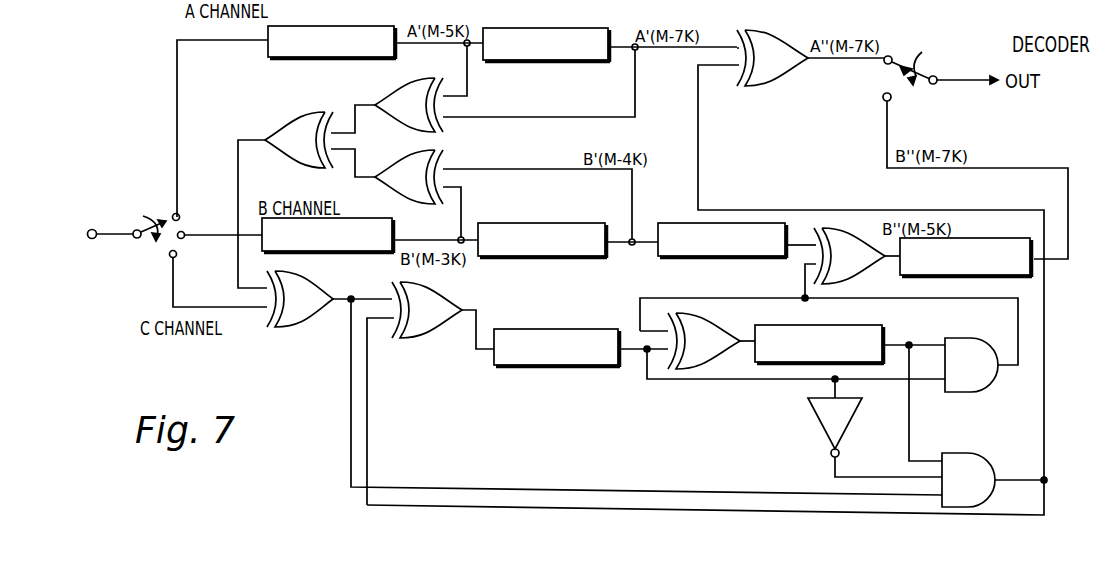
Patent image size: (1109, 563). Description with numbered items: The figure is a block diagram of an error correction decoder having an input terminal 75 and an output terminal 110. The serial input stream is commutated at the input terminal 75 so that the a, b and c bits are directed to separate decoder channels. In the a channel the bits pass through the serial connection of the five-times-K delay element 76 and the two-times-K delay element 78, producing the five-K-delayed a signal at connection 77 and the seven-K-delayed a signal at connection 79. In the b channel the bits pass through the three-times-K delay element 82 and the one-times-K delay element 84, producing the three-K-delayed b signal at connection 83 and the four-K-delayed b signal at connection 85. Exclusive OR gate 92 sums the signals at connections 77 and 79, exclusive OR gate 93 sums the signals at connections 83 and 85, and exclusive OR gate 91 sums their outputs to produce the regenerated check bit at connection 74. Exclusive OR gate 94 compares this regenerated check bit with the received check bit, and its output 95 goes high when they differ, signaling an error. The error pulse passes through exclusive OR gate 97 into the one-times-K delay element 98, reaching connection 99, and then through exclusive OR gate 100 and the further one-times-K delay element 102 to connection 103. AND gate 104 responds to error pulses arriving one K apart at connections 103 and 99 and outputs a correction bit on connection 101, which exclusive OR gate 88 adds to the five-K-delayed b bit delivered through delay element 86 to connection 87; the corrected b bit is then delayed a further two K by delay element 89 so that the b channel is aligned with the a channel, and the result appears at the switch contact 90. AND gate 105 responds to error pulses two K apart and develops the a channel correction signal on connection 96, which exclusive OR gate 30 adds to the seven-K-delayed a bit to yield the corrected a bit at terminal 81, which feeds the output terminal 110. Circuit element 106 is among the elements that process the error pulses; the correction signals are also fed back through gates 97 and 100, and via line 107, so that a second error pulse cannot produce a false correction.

The exclusive OR gate 30 is at (789, 71).
The connection 74 is at (236, 155).
The input terminal 75 is at (115, 233).
The 5 times K delay element 76 is at (320, 24).
The connection 77 is at (470, 81).
The 2 times K delay element 78 is at (567, 28).
The connection 79 is at (637, 67).
The terminal 81 is at (830, 63).
The 3 times K delay element 82 is at (332, 256).
The connection 83 is at (465, 215).
The 1 times K delay element 84 is at (550, 222).
The connection 85 is at (628, 249).
The 1 times K bit delay element 86 is at (710, 260).
The connection 87 is at (797, 243).
The exclusive OR gate 88 is at (858, 270).
The delay element 89 is at (1000, 238).
The switch contact B''(M-7K) 90 is at (884, 119).
The exclusive OR gate 91 is at (306, 154).
The exclusive OR gate 92 is at (418, 119).
The exclusive OR gate 93 is at (418, 191).
The exclusive OR gate 94 is at (307, 313).
The output connection 95 is at (347, 392).
The connection 96 is at (367, 399).
The exclusive OR gate 97 is at (430, 324).
The 1 times K bit delay element 98 is at (522, 368).
The connection 99 is at (660, 381).
The exclusive OR gate 100 is at (712, 356).
The connection 101 is at (770, 297).
The 1 times K bit delay element 102 is at (872, 326).
The connection 103 is at (912, 342).
The AND gate 104 is at (986, 382).
The AND gate 105 is at (983, 496).
The circuit element 106 is at (851, 429).
The connection line from inverter 107 is at (872, 478).
The output terminal 110 is at (962, 76).